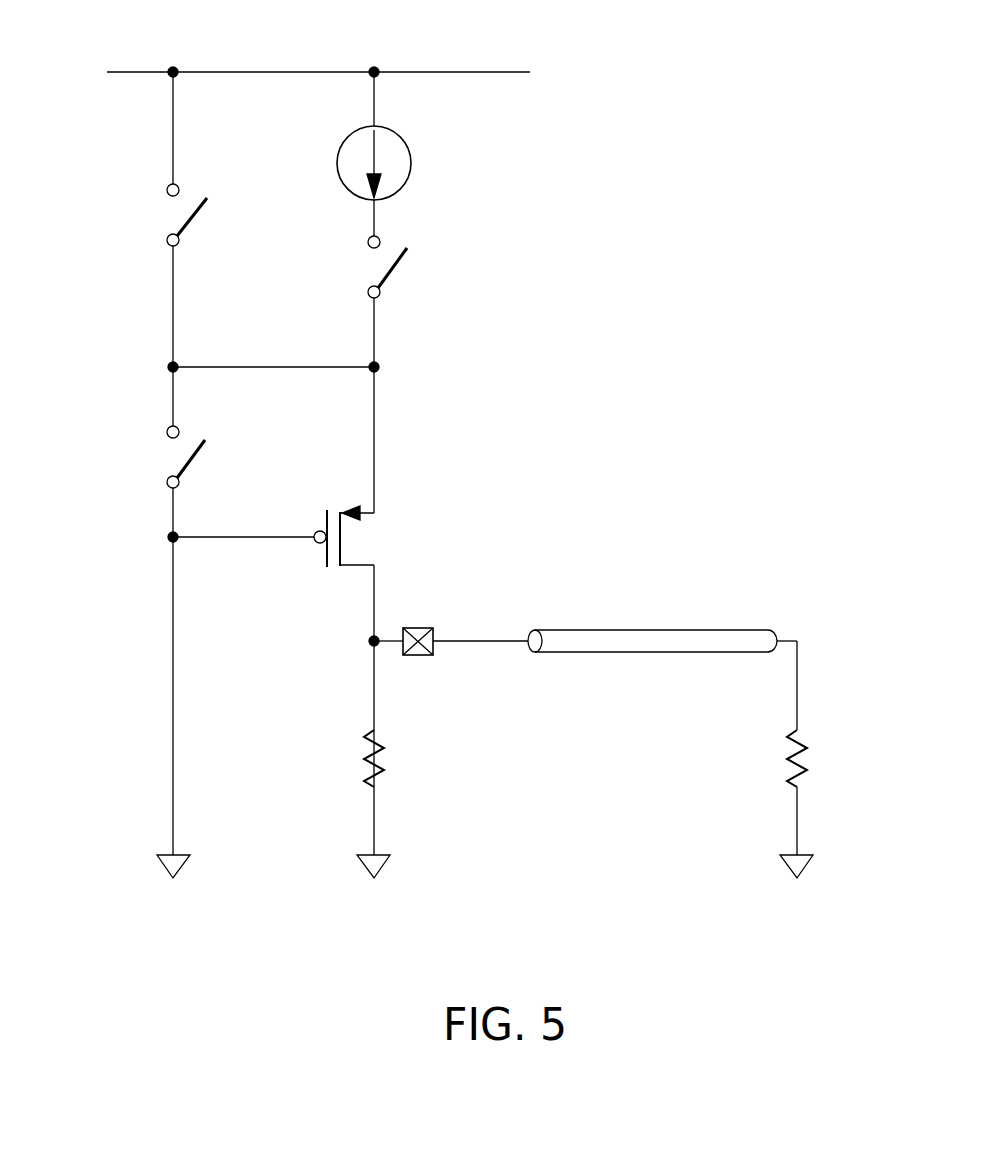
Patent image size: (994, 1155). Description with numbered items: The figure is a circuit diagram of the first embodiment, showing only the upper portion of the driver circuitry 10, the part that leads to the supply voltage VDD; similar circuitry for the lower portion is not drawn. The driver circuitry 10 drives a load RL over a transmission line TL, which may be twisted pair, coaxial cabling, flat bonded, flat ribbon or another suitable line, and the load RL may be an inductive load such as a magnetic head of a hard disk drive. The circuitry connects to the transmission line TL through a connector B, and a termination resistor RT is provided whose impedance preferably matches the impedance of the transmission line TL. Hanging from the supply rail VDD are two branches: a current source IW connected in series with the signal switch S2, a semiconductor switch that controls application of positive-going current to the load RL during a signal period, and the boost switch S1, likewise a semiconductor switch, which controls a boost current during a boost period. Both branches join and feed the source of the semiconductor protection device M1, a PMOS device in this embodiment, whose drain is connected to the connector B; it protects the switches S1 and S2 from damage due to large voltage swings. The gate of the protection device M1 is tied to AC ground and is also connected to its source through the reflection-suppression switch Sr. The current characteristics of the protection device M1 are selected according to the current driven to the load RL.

The driver circuitry 10 is at (736, 150).
The supply voltage VDD is at (318, 53).
The boost switch S1 is at (153, 159).
The reflection-suppression switch Sr is at (152, 457).
The signal switch S2 is at (407, 267).
The current source IW is at (397, 154).
The semiconductor protection device M1 is at (300, 536).
The connector B is at (403, 622).
The transmission line TL is at (615, 618).
The termination resistor RT is at (400, 758).
The load RL is at (814, 759).